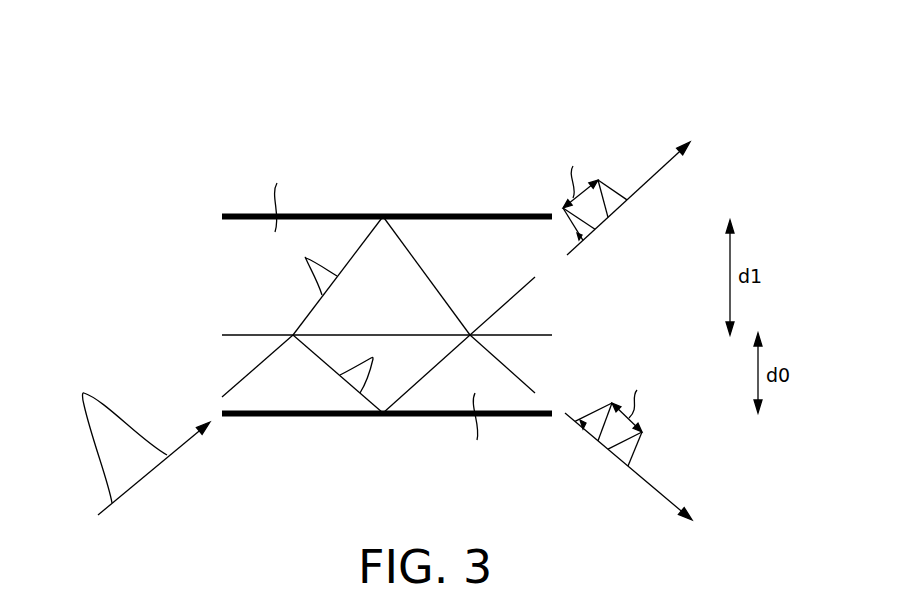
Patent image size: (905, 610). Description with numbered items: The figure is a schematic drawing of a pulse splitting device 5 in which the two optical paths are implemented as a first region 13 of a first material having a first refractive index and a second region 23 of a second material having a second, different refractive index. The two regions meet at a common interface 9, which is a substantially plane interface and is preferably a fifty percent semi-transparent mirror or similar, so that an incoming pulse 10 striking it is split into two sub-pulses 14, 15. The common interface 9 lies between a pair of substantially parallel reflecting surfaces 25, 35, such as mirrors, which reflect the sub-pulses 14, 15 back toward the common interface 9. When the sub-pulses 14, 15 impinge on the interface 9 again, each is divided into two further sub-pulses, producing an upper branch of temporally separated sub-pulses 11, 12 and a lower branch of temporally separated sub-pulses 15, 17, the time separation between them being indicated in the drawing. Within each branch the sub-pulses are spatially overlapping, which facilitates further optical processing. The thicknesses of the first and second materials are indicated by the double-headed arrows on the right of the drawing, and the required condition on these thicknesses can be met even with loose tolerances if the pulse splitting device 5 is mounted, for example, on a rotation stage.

The pulse splitting device 5 is at (118, 100).
The interface 9 is at (562, 335).
The pulse 10 is at (93, 442).
The sub-pulse 11 is at (583, 240).
The sub-pulse 12 is at (603, 180).
The first region 13 is at (268, 393).
The sub-pulse 14 is at (377, 362).
The sub-pulse 15 is at (332, 281).
The sub-pulse 17 is at (585, 430).
The second region 23 is at (253, 258).
The reflecting surface 25 is at (328, 420).
The reflecting surface 35 is at (452, 209).